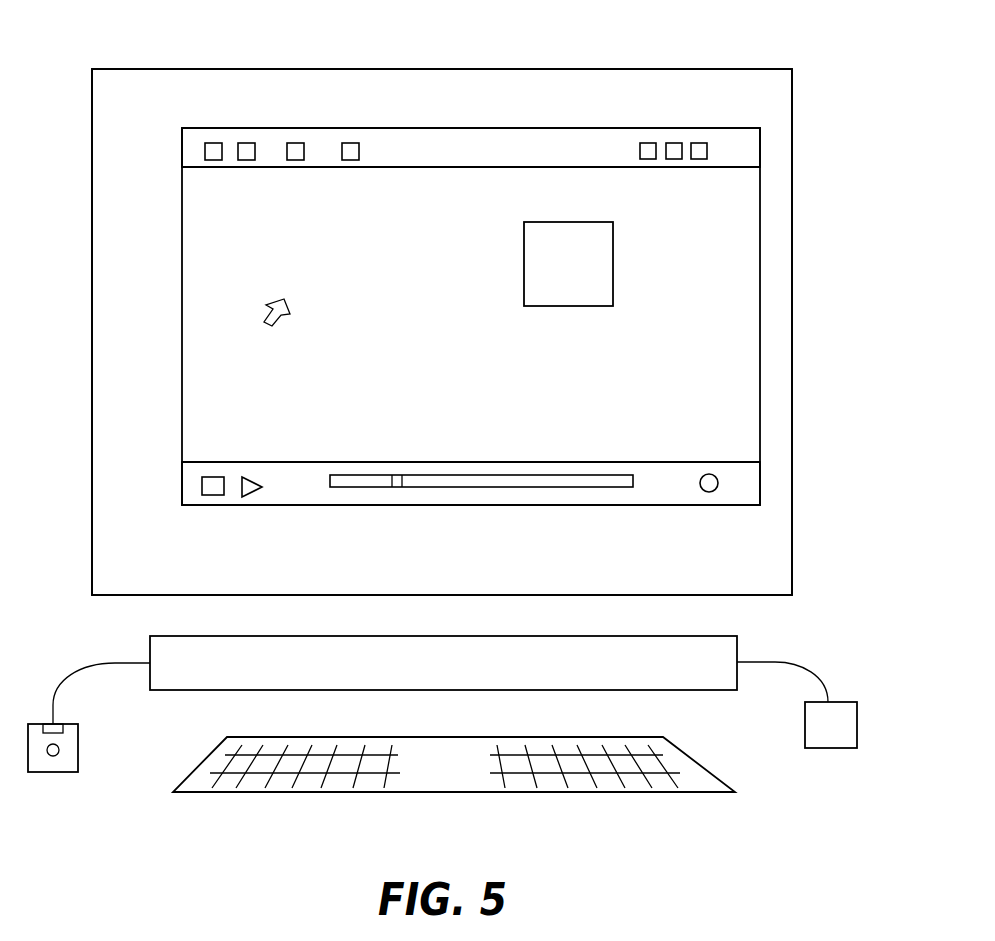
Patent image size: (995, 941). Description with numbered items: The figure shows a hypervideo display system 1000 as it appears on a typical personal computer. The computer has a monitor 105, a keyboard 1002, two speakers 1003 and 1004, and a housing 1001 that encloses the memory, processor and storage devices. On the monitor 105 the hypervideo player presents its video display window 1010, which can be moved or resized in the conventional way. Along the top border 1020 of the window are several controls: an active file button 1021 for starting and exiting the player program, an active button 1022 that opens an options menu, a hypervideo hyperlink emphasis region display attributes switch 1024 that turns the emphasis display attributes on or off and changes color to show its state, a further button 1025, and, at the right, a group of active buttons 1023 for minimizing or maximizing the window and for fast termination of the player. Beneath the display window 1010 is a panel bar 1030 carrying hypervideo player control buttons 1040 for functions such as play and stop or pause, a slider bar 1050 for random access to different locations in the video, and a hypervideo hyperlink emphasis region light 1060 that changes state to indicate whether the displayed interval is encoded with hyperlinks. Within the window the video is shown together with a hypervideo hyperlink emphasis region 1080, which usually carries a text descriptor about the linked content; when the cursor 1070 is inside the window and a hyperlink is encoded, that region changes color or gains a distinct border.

The computer system 1000 is at (776, 38).
The monitor 105 is at (792, 338).
The video display window 1010 is at (294, 400).
The top border 1020 is at (505, 160).
The active file button 1021 is at (213, 143).
The active button 1022 is at (246, 143).
The group of active buttons 1023 is at (677, 127).
The hypervideo hyperlink emphasis region display attributes switch 1024 is at (296, 143).
The toolbar button 1025 is at (351, 143).
The panel bar 1030 is at (624, 514).
The hypervideo player control buttons 1040 is at (230, 514).
The slider bar 1050 is at (413, 487).
The hypervideo hyperlink emphasis region light 1060 is at (709, 492).
The cursor 1070 is at (288, 307).
The hypervideo hyperlink emphasis region 1080 is at (586, 275).
The housing 1001 is at (462, 672).
The keyboard 1002 is at (460, 775).
The speaker 1003 is at (849, 735).
The speaker 1004 is at (48, 772).